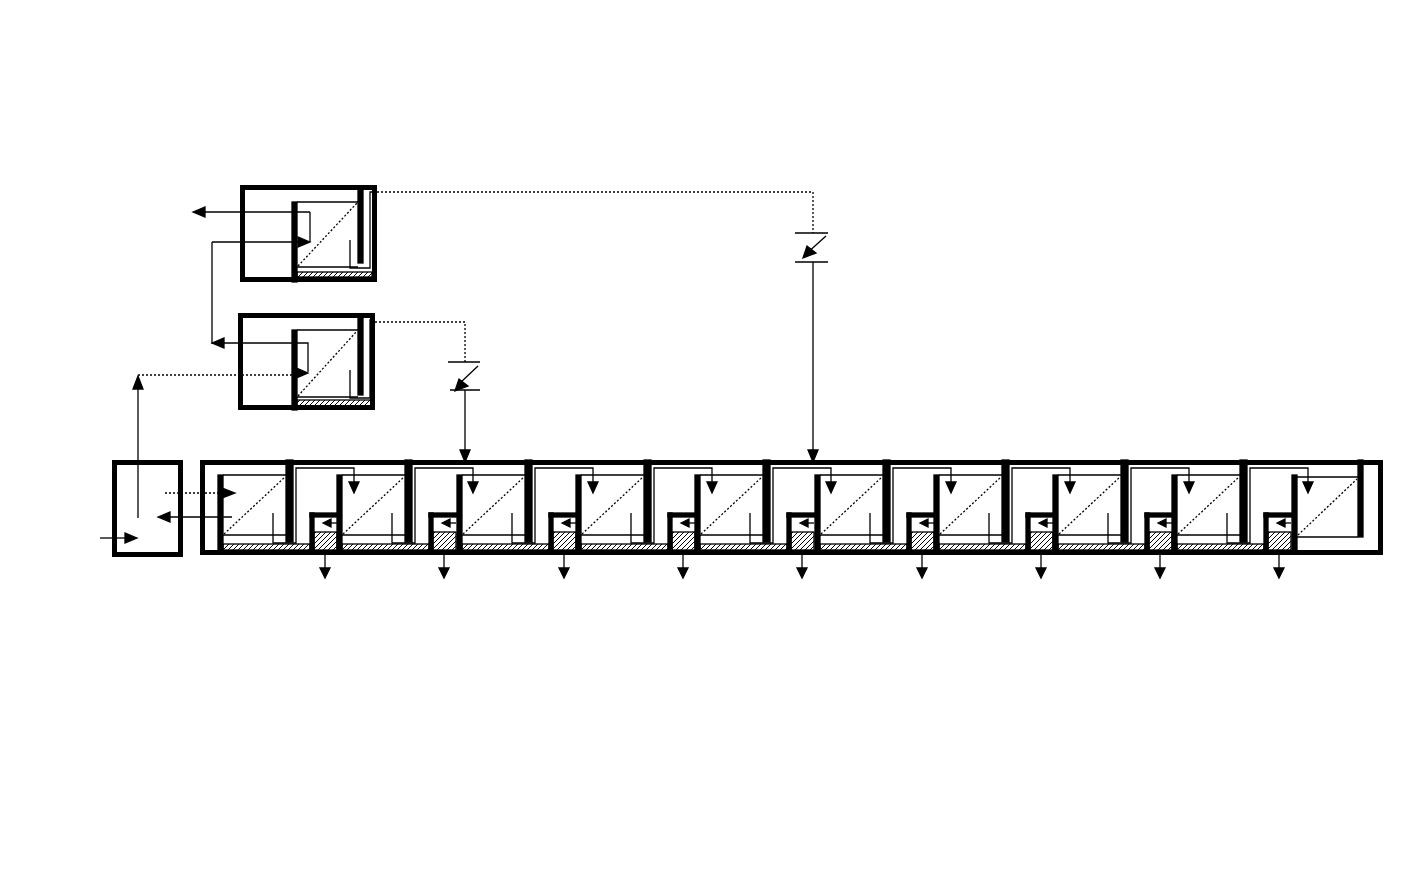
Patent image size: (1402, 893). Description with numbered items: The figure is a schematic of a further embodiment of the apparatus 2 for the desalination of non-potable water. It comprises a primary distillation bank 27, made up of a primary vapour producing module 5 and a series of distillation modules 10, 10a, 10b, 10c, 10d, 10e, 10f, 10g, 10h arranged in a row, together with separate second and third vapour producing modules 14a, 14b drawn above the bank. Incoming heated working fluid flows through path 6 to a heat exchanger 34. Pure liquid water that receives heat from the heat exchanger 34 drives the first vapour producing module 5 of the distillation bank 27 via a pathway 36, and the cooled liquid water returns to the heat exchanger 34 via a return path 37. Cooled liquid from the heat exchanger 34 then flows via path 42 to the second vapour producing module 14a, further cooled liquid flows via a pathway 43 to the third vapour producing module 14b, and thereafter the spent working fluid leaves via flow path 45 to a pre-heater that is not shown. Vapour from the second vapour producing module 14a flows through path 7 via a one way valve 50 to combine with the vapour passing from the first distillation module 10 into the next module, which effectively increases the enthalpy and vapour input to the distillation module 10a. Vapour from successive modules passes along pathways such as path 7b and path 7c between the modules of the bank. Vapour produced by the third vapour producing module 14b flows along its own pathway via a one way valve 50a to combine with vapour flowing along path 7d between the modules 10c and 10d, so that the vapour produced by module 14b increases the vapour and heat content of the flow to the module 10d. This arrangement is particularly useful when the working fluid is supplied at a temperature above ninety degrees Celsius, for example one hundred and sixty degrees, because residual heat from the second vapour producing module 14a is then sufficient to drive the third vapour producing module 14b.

The apparatus 2 is at (165, 135).
The primary vapour producing module 5 is at (262, 557).
The path 6 is at (103, 538).
The path 7 is at (466, 330).
The path 7b is at (627, 468).
The path 7c is at (733, 465).
The path 7d is at (843, 466).
The distillation module 10 is at (352, 468).
The distillation module 10a is at (503, 460).
The distillation module 10b is at (636, 468).
The distillation module 10c is at (743, 465).
The distillation module 10d is at (853, 466).
The distillation module 10e is at (953, 460).
The distillation module 10f is at (1073, 460).
The distillation module 10g is at (1198, 460).
The distillation module 10h is at (1312, 460).
The second vapour producing module 14a is at (384, 312).
The third vapour producing module 14b is at (311, 183).
The primary distillation bank 27 is at (860, 589).
The heat exchanger 34 is at (112, 485).
The pathway 36 is at (200, 460).
The return path 37 is at (195, 525).
The path 42 is at (136, 430).
The pathway 43 is at (210, 292).
The flow path 45 is at (218, 190).
The one way valve 50 is at (482, 378).
The one way valve 50a is at (828, 250).